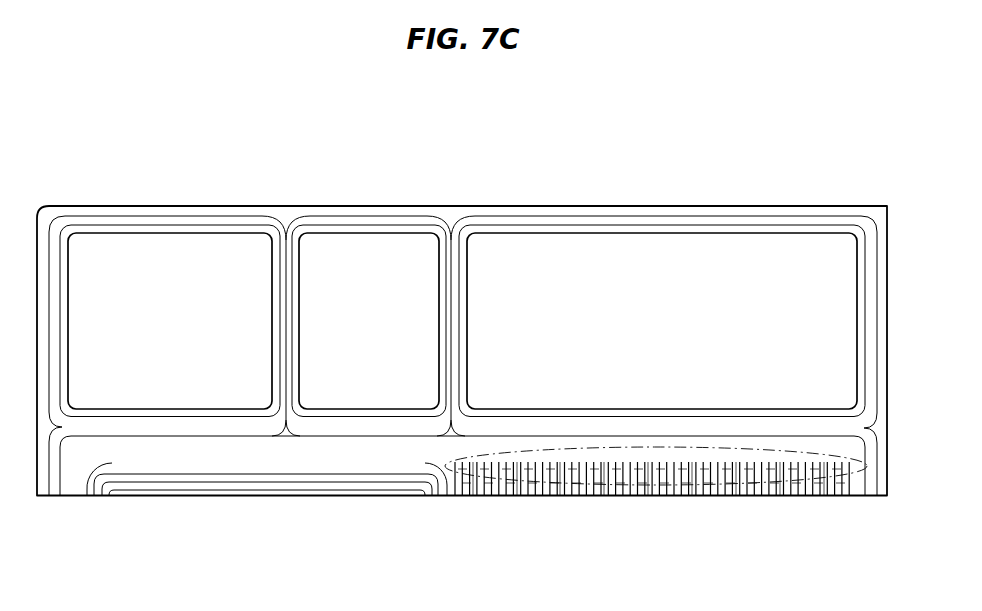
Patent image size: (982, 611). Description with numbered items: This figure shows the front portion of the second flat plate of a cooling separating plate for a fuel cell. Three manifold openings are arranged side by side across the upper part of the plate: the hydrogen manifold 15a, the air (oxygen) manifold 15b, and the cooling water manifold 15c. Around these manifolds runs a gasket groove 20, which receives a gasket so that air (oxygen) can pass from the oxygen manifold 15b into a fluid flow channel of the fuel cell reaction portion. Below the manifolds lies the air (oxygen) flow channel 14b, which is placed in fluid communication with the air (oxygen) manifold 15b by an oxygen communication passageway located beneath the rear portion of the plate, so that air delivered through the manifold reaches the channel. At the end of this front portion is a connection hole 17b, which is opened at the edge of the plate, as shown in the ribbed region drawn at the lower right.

The hydrogen manifold 15a is at (157, 278).
The air (oxygen) manifold 15b is at (353, 260).
The cooling water manifold 15c is at (670, 260).
The gasket groove 20 is at (397, 222).
The air (oxygen) flow channel 14b is at (250, 474).
The connection hole 17b is at (663, 487).